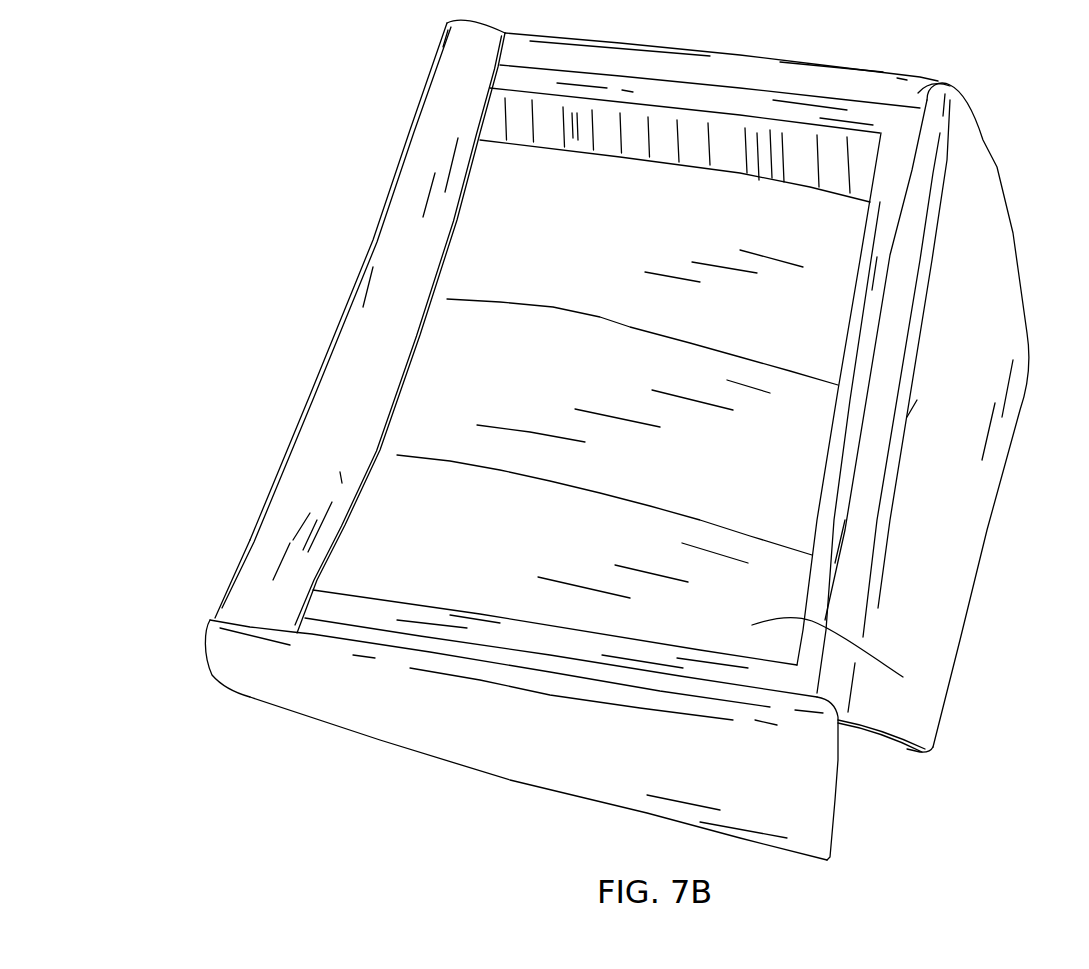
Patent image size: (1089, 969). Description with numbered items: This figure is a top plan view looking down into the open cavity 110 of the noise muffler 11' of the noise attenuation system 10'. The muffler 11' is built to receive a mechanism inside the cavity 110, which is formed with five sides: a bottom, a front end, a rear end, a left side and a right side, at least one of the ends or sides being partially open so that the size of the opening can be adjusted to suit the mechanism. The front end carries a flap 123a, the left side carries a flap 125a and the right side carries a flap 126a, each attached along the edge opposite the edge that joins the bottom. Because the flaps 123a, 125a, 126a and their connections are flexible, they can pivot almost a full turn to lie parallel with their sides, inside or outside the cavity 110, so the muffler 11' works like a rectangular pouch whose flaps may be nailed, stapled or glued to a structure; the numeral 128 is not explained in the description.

The noise attenuation system 10' is at (592, 440).
The muffler 11' is at (203, 579).
The open cavity 110 is at (895, 242).
The flap 123a is at (258, 694).
The flap 125a is at (358, 307).
The flap 126a is at (975, 517).
The fold line 128 is at (903, 677).